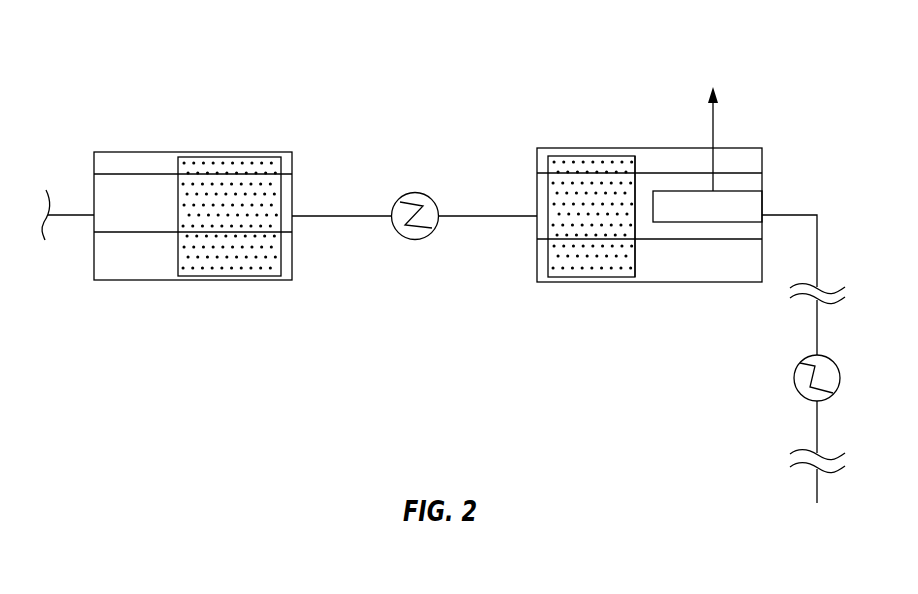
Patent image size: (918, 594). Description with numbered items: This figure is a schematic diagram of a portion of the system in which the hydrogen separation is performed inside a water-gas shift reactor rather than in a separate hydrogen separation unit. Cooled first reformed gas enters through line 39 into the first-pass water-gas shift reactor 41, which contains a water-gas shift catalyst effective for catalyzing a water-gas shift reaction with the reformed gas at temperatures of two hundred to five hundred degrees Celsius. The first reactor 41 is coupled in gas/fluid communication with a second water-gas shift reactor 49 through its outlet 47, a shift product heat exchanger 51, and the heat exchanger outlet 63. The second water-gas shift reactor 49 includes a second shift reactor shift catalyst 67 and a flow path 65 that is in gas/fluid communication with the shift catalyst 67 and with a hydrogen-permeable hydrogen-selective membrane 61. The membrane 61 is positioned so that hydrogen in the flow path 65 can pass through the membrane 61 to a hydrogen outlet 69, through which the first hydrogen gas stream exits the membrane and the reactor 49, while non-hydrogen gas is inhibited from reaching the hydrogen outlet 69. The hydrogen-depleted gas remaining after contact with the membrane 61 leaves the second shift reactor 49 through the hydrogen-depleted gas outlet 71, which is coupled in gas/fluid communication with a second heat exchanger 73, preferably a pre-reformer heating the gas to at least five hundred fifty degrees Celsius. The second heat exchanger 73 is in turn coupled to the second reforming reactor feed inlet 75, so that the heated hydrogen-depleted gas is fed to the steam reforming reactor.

The line 39 is at (70, 212).
The first-pass water-gas shift reactor 41 is at (142, 152).
The outlet 47 is at (347, 215).
The shift product heat exchanger 51 is at (417, 193).
The heat exchanger outlet 63 is at (498, 215).
The second water-gas shift reactor 49 is at (585, 148).
The second shift reactor shift catalyst 67 is at (557, 218).
The flow path 65 is at (645, 222).
The hydrogen-permeable hydrogen-selective membrane 61 is at (700, 208).
The hydrogen outlet 69 is at (714, 122).
The hydrogen-depleted gas outlet 71 is at (802, 213).
The second heat exchanger 73 is at (794, 378).
The second reforming reactor feed inlet 75 is at (817, 487).